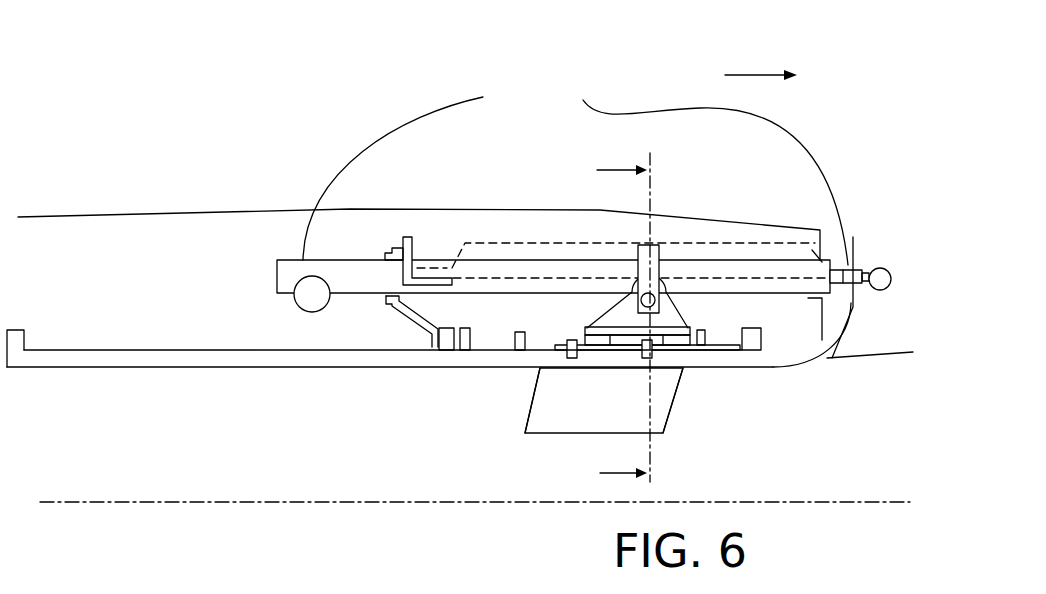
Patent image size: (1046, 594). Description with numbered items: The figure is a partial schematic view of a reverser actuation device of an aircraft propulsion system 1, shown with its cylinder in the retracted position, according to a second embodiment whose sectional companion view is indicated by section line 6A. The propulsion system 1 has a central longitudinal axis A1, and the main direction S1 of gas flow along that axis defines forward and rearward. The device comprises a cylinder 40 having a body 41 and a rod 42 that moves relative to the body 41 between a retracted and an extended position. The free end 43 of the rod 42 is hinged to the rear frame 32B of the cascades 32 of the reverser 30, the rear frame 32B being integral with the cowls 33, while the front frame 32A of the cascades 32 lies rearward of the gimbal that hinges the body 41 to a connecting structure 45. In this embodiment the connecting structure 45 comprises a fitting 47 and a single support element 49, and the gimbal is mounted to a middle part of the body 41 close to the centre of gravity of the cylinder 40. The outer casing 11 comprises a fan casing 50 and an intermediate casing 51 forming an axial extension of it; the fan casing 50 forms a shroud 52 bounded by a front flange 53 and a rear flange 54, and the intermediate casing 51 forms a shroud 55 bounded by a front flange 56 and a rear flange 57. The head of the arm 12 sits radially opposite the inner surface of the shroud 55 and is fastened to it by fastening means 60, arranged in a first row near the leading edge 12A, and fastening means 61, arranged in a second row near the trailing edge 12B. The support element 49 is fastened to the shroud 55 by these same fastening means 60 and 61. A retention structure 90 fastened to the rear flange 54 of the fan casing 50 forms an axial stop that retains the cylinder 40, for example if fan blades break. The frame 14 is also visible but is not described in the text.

The aircraft propulsion system 1 is at (98, 82).
The outer casing 11 is at (390, 538).
The arm 12 is at (575, 428).
The leading edge 12A is at (530, 403).
The trailing edge 12B is at (674, 398).
The housing / frame 14 is at (146, 212).
The reverser 30 is at (814, 136).
The cascades 32 is at (538, 243).
The front frame 32A is at (407, 237).
The rear frame 32B is at (870, 358).
The cowls 33 is at (870, 358).
The cylinder 40 is at (575, 156).
The body 41 is at (407, 170).
The rod 42 is at (700, 172).
The free end 43 is at (880, 268).
The connecting structure 45 is at (685, 228).
The fitting 47 is at (661, 270).
The support element 49 is at (681, 296).
The fan casing 50 is at (429, 405).
The intermediate casing 51 is at (564, 453).
The shroud 52 is at (155, 360).
The front flange 53 is at (13, 329).
The rear flange 54 is at (448, 357).
The shroud 55 is at (722, 368).
The front flange 56 is at (463, 368).
The rear flange 57 is at (755, 369).
The fastening means 60 is at (568, 338).
The fastening means 61 is at (655, 372).
The retention structure 90 is at (400, 312).
The main direction of gas flow S1 is at (757, 75).
The section line 6A is at (598, 168).
The central longitudinal axis A1 is at (53, 505).